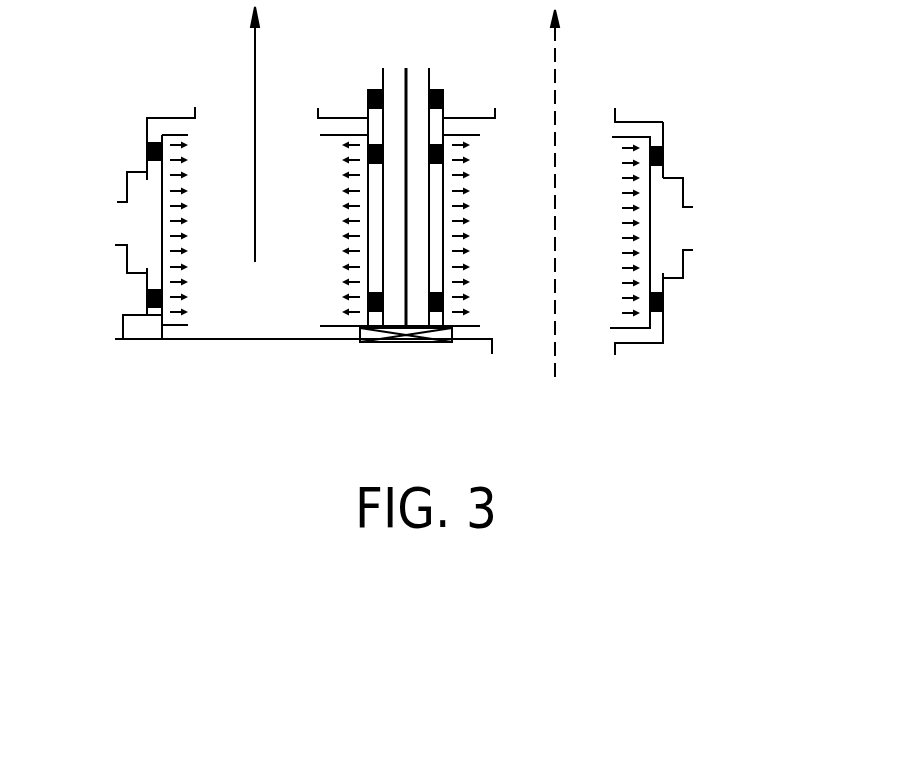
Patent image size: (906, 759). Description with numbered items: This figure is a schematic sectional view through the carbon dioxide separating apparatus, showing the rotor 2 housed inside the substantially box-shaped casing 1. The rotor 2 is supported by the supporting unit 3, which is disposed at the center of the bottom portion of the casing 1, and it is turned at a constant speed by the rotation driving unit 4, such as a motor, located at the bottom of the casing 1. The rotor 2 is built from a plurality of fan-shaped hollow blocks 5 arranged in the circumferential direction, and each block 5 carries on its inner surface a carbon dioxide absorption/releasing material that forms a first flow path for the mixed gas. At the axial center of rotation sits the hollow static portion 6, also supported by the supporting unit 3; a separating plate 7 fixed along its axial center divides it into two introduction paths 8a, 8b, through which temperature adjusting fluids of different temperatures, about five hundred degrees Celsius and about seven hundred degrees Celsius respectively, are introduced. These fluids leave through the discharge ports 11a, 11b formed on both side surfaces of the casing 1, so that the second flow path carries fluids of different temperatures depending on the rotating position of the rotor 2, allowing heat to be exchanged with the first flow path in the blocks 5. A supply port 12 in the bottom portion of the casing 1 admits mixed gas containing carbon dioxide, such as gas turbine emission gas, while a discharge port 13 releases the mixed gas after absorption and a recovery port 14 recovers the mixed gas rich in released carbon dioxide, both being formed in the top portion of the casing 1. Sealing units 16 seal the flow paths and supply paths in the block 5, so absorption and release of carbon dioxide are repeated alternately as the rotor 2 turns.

The casing 1 is at (658, 122).
The rotor 2 is at (668, 233).
The supporting unit 3 is at (404, 343).
The rotation driving unit 4 is at (140, 333).
The hollow block 5 is at (255, 305).
The hollow static portion 6 is at (430, 72).
The separating plate 7 is at (405, 68).
The introduction path 8a is at (417, 318).
The introduction path 8b is at (392, 318).
The discharge port 11a is at (693, 202).
The discharge port 11b is at (122, 246).
The supply port 12 is at (542, 352).
The discharge port 13 is at (585, 120).
The recovery port 14 is at (212, 112).
The sealing unit 16 is at (146, 298).